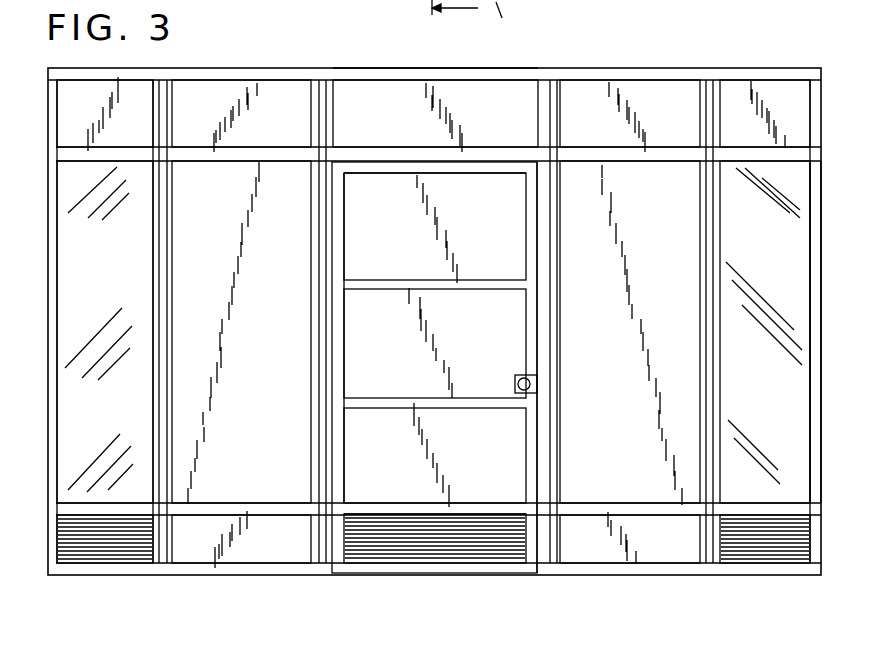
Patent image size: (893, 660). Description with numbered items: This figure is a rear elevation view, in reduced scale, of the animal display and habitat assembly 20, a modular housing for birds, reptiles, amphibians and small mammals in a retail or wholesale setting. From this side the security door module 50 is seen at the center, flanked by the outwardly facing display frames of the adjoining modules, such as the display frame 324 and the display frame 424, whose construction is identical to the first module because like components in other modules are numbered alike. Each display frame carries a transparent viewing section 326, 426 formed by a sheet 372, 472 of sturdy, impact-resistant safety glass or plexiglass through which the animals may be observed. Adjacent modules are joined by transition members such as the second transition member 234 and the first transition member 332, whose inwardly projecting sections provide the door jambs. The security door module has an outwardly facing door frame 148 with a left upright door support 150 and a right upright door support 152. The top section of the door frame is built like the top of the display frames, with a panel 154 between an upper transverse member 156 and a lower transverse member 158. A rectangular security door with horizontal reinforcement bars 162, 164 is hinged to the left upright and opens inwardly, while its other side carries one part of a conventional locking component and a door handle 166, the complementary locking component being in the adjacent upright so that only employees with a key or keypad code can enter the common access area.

The animal display and habitat assembly 20 is at (206, 582).
The security door module 50 is at (483, 68).
The door frame 148 is at (538, 153).
The left upright door support 150 is at (329, 192).
The right upright door support 152 is at (540, 230).
The panel 154 is at (517, 122).
The upper transverse member 156 is at (357, 68).
The lower transverse member 158 is at (365, 150).
The horizontal reinforcement bar 162 is at (378, 278).
The horizontal reinforcement bar 164 is at (370, 398).
The door handle 166 is at (515, 382).
The second transition member 234 is at (247, 68).
The display frame 324 is at (130, 69).
The transparent viewing section 326 is at (136, 266).
The first transition member 332 is at (632, 68).
The sheet 372 is at (131, 358).
The display frame 424 is at (752, 68).
The transparent viewing section 426 is at (781, 252).
The sheet 472 is at (811, 276).